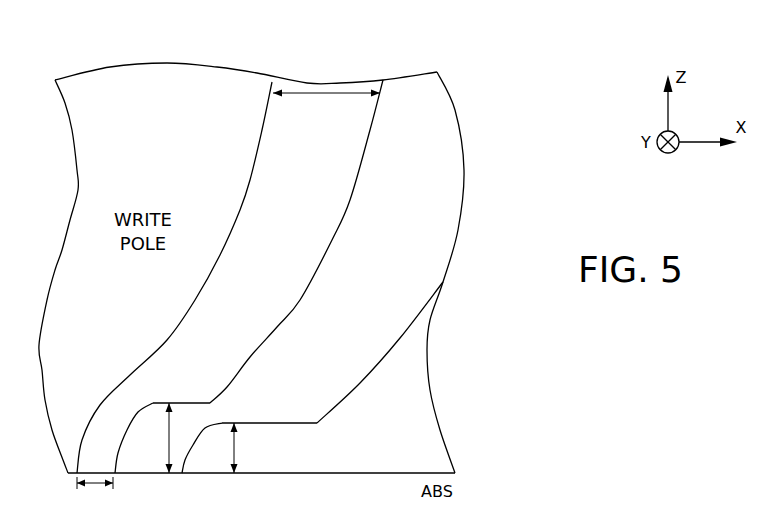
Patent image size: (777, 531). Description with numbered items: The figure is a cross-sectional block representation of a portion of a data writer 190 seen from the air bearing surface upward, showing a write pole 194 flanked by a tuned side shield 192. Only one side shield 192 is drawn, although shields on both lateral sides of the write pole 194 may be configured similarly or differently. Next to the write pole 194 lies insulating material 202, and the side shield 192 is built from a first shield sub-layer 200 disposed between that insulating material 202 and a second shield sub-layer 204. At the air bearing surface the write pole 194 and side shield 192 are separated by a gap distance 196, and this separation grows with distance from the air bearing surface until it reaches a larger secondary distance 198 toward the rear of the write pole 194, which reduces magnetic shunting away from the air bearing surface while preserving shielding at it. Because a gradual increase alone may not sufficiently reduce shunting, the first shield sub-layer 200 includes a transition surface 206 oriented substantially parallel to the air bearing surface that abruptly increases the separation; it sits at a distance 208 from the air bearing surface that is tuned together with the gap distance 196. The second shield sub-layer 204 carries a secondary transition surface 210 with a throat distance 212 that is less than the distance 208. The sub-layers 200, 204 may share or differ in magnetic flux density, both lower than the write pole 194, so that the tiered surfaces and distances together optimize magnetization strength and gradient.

The write pole 190 is at (103, 55).
The side shield 192 is at (447, 265).
The write pole 194 is at (157, 98).
The gap distance 196 is at (95, 494).
The secondary distance 198 is at (326, 103).
The first shield sub-layer 200 is at (401, 107).
The insulating material 202 is at (274, 216).
The second shield sub-layer 204 is at (405, 467).
The transition surface 206 is at (167, 402).
The distance 208 is at (154, 438).
The secondary transition surface 210 is at (267, 422).
The throat distance 212 is at (249, 448).